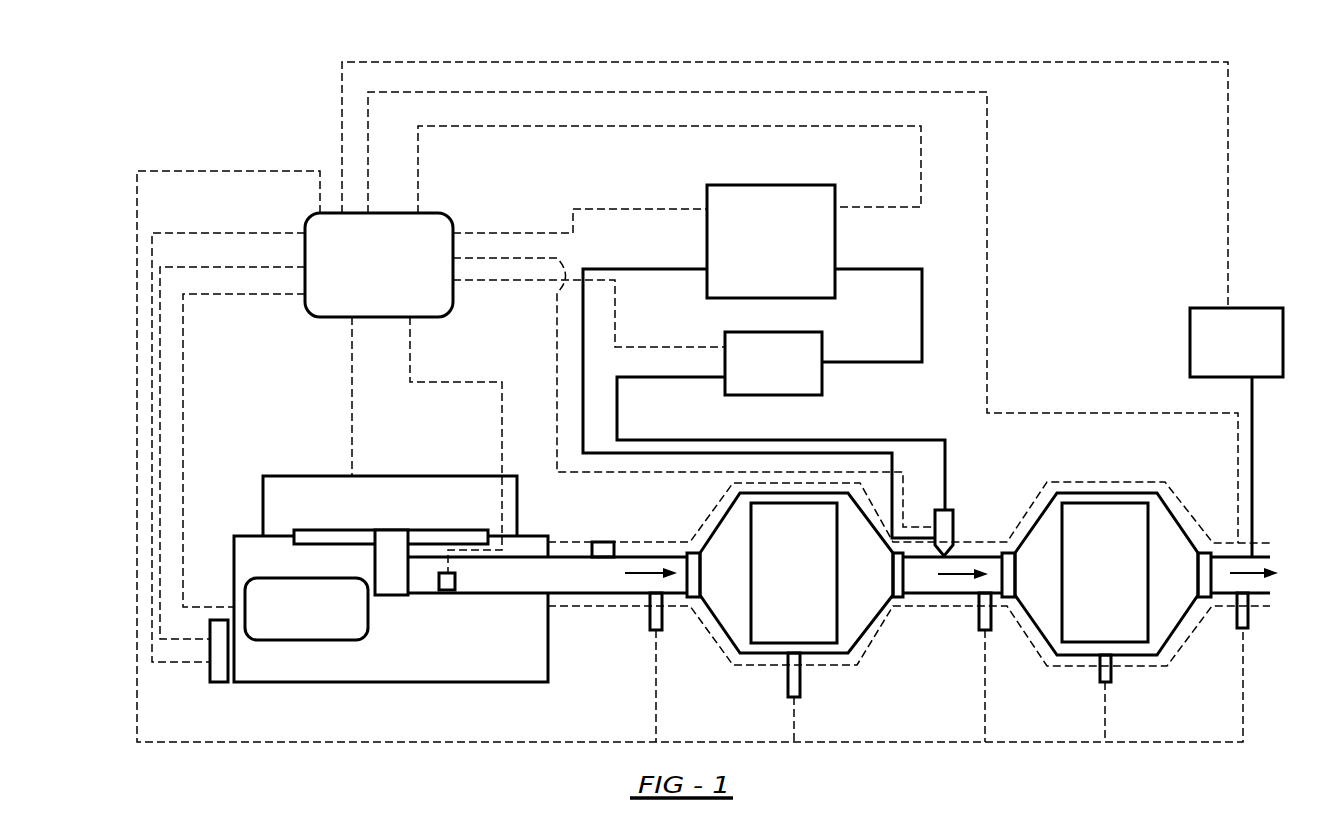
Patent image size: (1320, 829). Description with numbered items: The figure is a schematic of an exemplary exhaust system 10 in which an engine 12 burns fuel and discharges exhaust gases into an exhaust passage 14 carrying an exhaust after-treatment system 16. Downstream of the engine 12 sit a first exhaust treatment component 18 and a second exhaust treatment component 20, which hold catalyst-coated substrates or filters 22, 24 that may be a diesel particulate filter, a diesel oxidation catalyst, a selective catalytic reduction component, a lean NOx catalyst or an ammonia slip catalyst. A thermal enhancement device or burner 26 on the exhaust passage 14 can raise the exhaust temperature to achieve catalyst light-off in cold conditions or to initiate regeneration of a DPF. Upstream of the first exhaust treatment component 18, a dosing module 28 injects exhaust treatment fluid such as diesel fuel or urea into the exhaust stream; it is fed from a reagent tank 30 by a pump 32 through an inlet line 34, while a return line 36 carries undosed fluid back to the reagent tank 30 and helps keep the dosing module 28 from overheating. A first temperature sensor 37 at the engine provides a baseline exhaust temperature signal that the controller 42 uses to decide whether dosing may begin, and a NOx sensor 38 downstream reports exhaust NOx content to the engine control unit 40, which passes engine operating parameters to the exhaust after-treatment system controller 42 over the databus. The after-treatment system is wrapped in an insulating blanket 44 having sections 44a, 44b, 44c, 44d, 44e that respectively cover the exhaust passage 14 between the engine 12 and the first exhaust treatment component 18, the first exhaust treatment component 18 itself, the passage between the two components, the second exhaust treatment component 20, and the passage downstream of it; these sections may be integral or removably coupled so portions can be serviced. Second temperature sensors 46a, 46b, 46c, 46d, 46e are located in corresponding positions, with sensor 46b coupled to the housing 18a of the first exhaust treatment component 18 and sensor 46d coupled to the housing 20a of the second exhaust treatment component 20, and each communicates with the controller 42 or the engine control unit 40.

The exhaust system 10 is at (216, 115).
The engine 12 is at (352, 683).
The exhaust passage 14 is at (567, 594).
The exhaust after-treatment system 16 is at (928, 630).
The first exhaust treatment component 18 is at (830, 670).
The housing of first exhaust treatment component 18a is at (865, 628).
The second exhaust treatment component 20 is at (1158, 683).
The housing of second exhaust treatment component 20a is at (1178, 630).
The catalyst-coated substrate or filter 22 is at (810, 587).
The catalyst-coated substrate or filter 24 is at (1120, 583).
The thermal enhancement device or burner 26 is at (600, 542).
The dosing module 28 is at (953, 527).
The reagent tank 30 is at (838, 242).
The pump 32 is at (803, 395).
The inlet line 34 is at (618, 398).
The return line 36 is at (683, 268).
The first temperature sensor 37 is at (450, 590).
The NOx sensor or meter 38 is at (1190, 333).
The engine control unit 40 is at (310, 641).
The exhaust after-treatment system controller 42 is at (437, 212).
The insulating blanket 44 is at (906, 612).
The insulating blanket section 44a is at (607, 600).
The insulating blanket section 44b is at (763, 665).
The insulating blanket section 44c is at (950, 603).
The insulating blanket section 44d is at (1073, 668).
The insulating blanket section 44e is at (1255, 603).
The second temperature sensor 46a is at (662, 620).
The second temperature sensor 46b is at (800, 682).
The second temperature sensor 46c is at (992, 620).
The second temperature sensor 46d is at (1112, 676).
The second temperature sensor 46e is at (1237, 608).